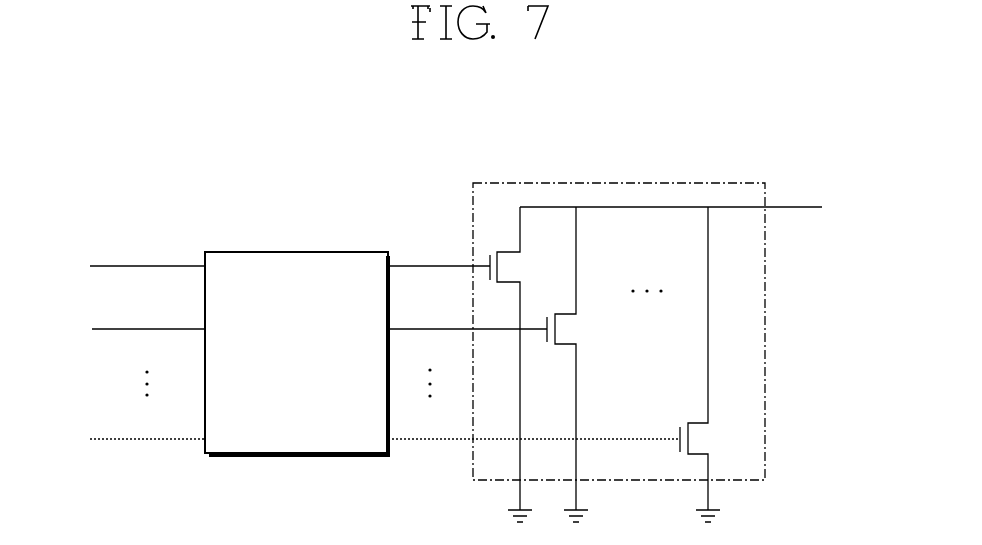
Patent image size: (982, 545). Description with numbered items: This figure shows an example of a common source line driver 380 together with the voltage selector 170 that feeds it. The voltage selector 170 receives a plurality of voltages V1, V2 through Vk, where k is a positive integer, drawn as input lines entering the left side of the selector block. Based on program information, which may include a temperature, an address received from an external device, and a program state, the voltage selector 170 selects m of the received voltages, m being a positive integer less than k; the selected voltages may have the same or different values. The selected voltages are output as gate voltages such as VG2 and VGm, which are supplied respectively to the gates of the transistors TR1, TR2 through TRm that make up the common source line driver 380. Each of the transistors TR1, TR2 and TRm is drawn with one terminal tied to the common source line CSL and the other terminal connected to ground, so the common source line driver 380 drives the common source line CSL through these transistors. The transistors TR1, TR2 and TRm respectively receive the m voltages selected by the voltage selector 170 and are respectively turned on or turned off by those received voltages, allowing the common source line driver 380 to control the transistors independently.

The voltage selector 170 is at (337, 252).
The common source line driver 380 is at (668, 323).
The transistor TR1 is at (524, 364).
The transistor TR2 is at (582, 364).
The transistor TRm is at (715, 364).
The common source line CSL is at (692, 208).
The voltage V1 is at (132, 266).
The voltage V2 is at (132, 329).
The voltage Vk is at (132, 439).
The gate voltage VG2 is at (467, 316).
The gate voltage VGm is at (534, 426).